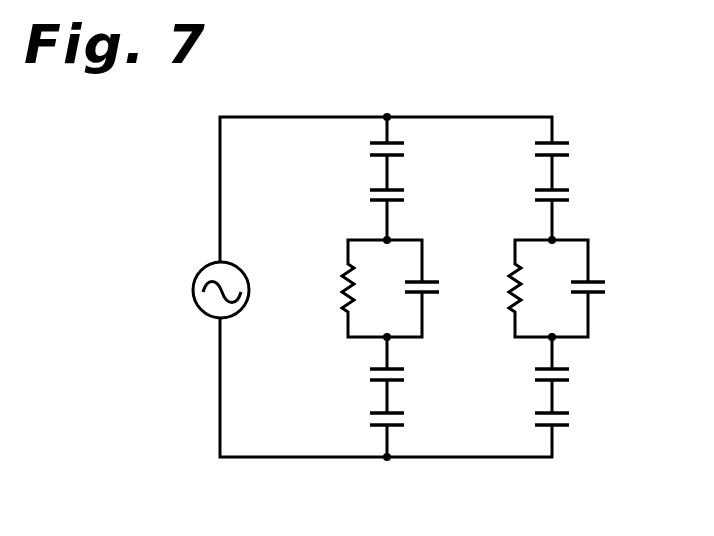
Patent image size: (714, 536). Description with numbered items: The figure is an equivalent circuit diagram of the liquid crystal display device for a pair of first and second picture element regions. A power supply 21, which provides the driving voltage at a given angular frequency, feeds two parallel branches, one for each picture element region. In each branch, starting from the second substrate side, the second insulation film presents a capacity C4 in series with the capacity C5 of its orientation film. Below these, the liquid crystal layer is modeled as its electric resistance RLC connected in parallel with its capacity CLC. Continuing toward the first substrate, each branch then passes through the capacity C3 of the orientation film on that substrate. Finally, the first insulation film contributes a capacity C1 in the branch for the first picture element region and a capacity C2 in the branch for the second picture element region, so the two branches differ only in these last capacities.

The power supply 21 is at (207, 272).
The capacity of second insulation film C4 is at (371, 143).
The capacity of orientation film C5 is at (371, 188).
The electric resistance of liquid crystal layer RLC is at (344, 276).
The capacity of liquid crystal layer CLC is at (432, 293).
The capacity of orientation film C3 is at (371, 369).
The capacity of first insulation film at first picture element region C1 is at (369, 414).
The capacity of first insulation film at second picture element region C2 is at (541, 414).